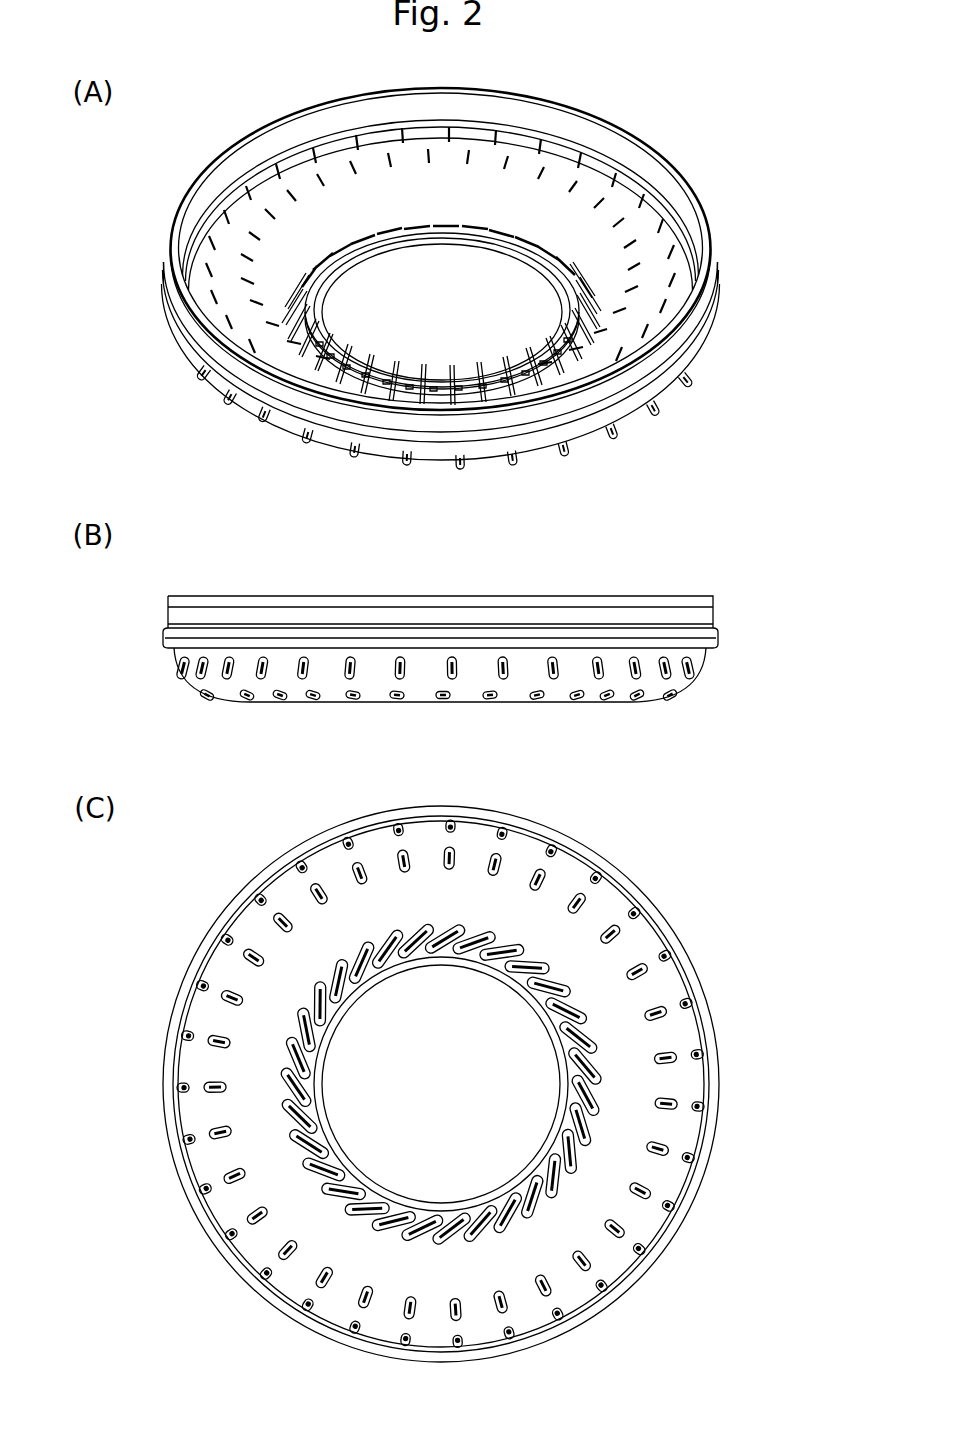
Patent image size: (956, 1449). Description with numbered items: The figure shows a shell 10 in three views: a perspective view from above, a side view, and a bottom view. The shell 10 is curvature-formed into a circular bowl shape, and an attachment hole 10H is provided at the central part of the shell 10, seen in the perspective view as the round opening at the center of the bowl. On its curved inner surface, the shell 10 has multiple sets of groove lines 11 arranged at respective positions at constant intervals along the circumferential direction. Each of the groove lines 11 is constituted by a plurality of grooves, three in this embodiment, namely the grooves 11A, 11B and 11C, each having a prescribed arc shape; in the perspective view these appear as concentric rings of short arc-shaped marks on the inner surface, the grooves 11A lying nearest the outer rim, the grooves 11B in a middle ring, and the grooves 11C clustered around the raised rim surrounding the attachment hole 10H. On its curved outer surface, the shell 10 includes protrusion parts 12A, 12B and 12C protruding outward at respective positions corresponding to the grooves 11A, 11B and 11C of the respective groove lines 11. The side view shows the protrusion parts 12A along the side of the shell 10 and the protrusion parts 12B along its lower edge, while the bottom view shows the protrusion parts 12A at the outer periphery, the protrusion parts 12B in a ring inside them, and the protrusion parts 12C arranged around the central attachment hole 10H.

The shell 10 is at (178, 198).
The attachment hole 10H is at (363, 263).
The groove lines 11 is at (614, 207).
The groove 11A is at (632, 205).
The groove 11B is at (618, 233).
The groove 11C is at (582, 292).
The protrusion part 12A is at (656, 672).
The protrusion part 12B is at (657, 699).
The protrusion part 12C is at (573, 1008).